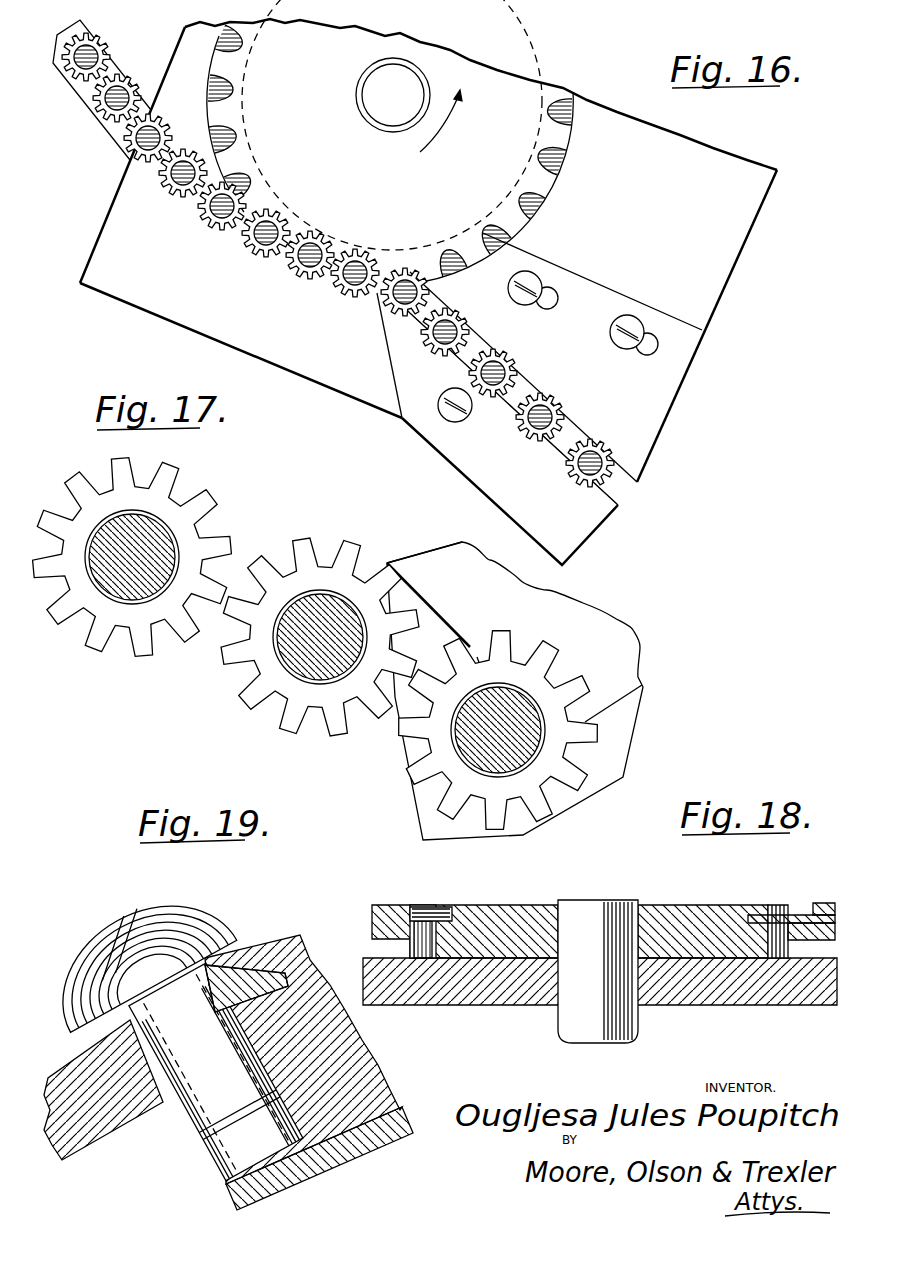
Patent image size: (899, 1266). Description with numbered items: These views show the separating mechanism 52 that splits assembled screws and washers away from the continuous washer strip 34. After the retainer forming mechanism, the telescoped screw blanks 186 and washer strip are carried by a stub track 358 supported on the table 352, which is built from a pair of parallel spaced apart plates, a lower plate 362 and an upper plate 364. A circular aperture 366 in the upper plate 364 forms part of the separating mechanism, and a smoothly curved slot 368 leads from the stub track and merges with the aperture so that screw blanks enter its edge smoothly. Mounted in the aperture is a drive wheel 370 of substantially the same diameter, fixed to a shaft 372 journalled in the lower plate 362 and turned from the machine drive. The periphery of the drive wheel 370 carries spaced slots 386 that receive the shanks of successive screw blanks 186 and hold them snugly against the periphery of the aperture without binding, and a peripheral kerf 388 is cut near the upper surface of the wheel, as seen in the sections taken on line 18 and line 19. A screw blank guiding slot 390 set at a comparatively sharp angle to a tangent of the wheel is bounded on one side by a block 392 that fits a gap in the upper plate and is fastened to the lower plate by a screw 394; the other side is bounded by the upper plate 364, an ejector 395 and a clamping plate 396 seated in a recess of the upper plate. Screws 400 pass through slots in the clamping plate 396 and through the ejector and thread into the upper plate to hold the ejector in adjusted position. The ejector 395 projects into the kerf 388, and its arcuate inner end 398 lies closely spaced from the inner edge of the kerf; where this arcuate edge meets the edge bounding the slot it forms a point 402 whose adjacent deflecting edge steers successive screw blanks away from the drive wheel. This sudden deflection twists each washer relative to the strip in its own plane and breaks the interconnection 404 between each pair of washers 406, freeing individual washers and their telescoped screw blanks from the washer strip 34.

In FIG. 16, the section line 18— 18 is at (176, 6).
In FIG. 16, the section line 19— 19 is at (327, 220).
In FIG. 16, the washer strip 34 is at (143, 145).
In FIG. 17, the washer strip 34 is at (230, 688).
In FIG. 16, the separating mechanism 52 is at (372, 318).
In FIG. 19, the separating mechanism 52 is at (248, 932).
In FIG. 18, the separating mechanism 52 is at (722, 893).
In FIG. 16, the screw blank 186 is at (247, 240).
In FIG. 17, the screw blank 186 is at (135, 592).
In FIG. 19, the screw blank 186 is at (95, 943).
In FIG. 16, the table 352 is at (728, 178).
In FIG. 18, the table 352 is at (776, 1008).
In FIG. 16, the stub track 358 is at (90, 100).
In FIG. 16, the lower plate 362 is at (584, 116).
In FIG. 19, the lower plate 362 is at (357, 1160).
In FIG. 18, the lower plate 362 is at (400, 990).
In FIG. 16, the upper plate 364 is at (703, 290).
In FIG. 19, the upper plate 364 is at (80, 1137).
In FIG. 18, the upper plate 364 is at (376, 905).
In FIG. 16, the circular aperture 366 is at (566, 185).
In FIG. 16, the curved slot 368 is at (195, 203).
In FIG. 16, the drive wheel 370 is at (515, 85).
In FIG. 19, the drive wheel 370 is at (268, 950).
In FIG. 18, the drive wheel 370 is at (510, 917).
In FIG. 16, the shaft 372 is at (380, 80).
In FIG. 18, the shaft 372 is at (575, 1025).
In FIG. 16, the slots 386 is at (530, 275).
In FIG. 19, the slots 386 is at (260, 1178).
In FIG. 18, the slots 386 is at (778, 948).
In FIG. 19, the peripheral kerf 388 is at (222, 964).
In FIG. 18, the peripheral kerf 388 is at (420, 905).
In FIG. 16, the screw blank guiding slot 390 is at (527, 390).
In FIG. 16, the block 392 is at (582, 528).
In FIG. 16, the screw 394 is at (455, 413).
In FIG. 16, the ejector 395 is at (517, 250).
In FIG. 17, the ejector 395 is at (627, 650).
In FIG. 18, the ejector 395 is at (790, 915).
In FIG. 16, the clamping plate 396 is at (618, 303).
In FIG. 18, the clamping plate 396 is at (822, 905).
In FIG. 16, the arcuate inner end 398 is at (441, 250).
In FIG. 17, the arcuate inner end 398 is at (442, 542).
In FIG. 16, the screws 400 is at (612, 318).
In FIG. 16, the point 402 is at (383, 256).
In FIG. 17, the point 402 is at (387, 563).
In FIG. 17, the interconnection 404 is at (227, 597).
In FIG. 17, the washers 406 is at (423, 773).